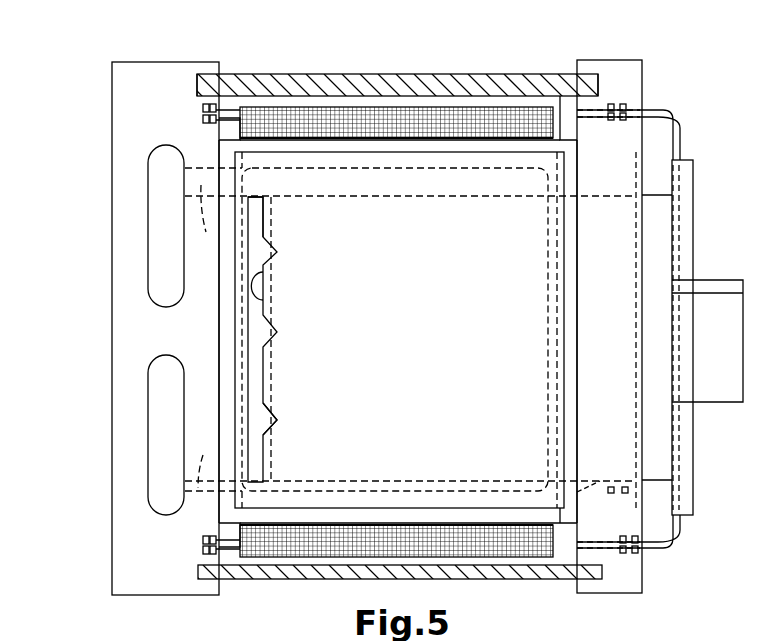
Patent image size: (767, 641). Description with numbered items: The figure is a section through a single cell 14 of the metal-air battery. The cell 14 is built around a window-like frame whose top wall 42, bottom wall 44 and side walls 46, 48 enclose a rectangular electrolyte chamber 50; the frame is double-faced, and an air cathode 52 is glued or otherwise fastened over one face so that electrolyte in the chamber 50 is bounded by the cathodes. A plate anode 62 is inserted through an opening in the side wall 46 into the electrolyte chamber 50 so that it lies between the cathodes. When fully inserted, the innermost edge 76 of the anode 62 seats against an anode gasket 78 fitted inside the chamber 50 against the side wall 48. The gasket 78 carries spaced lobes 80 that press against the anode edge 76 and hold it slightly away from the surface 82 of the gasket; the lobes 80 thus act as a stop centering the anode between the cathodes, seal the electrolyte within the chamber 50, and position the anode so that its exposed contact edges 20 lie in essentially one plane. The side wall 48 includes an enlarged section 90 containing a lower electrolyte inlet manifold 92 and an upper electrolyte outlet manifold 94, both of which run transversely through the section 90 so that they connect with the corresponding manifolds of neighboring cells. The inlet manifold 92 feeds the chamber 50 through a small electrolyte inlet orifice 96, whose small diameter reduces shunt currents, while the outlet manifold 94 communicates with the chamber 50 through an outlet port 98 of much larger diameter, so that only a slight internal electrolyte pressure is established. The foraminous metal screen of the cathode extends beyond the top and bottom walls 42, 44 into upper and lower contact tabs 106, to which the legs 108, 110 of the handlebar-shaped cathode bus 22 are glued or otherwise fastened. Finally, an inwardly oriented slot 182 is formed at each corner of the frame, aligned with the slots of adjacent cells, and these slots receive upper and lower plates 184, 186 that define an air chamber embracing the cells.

The cell 14 is at (687, 95).
The anode exposed contact edge 20 is at (683, 465).
The cathode bus 22 is at (683, 525).
The top wall 42 is at (302, 148).
The bottom wall 44 is at (248, 515).
The side wall 46 is at (568, 303).
The side wall 48 is at (228, 316).
The electrolyte chamber 50 is at (395, 161).
The air cathode 52 is at (232, 157).
The plate anode 62 is at (517, 368).
The innermost edge 76 is at (270, 277).
The anode gasket 78 is at (253, 373).
The lobe 80 is at (275, 422).
The gasket surface 82 is at (263, 219).
The enlarged section 90 is at (120, 323).
The lower electrolyte inlet manifold 92 is at (160, 448).
The upper electrolyte outlet manifold 94 is at (160, 233).
The electrolyte inlet orifice 96 is at (205, 462).
The outlet port 98 is at (205, 219).
The contact tab 106 is at (350, 121).
The cathode bus leg 108 is at (230, 112).
The cathode bus leg 110 is at (228, 548).
The slot 182 is at (207, 77).
The upper plate 184 is at (465, 88).
The lower plate 186 is at (293, 577).